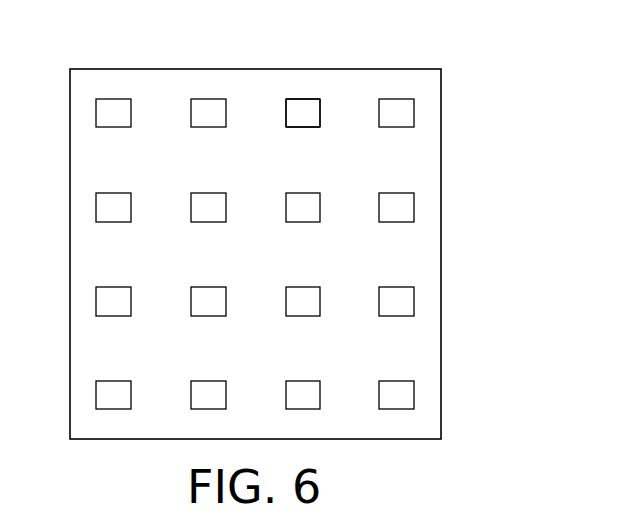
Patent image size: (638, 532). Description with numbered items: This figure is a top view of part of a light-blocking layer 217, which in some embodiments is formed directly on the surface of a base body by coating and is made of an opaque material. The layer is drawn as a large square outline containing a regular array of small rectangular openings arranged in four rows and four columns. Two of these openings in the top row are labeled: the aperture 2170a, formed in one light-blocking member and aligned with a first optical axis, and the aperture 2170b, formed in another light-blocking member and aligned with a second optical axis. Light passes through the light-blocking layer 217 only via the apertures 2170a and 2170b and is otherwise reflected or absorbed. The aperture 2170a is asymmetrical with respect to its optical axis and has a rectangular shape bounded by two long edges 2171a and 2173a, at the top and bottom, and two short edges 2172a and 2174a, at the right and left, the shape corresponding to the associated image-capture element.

The light-blocking layer 217 is at (415, 351).
The aperture 2170a is at (287, 98).
The aperture 2170b is at (192, 98).
The long edge 2171a is at (302, 99).
The short edge 2172a is at (326, 112).
The long edge 2173a is at (303, 127).
The short edge 2174a is at (285, 114).